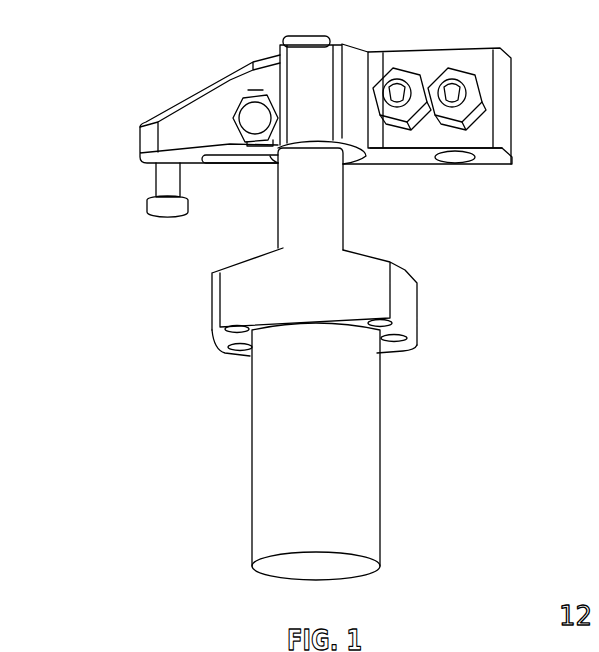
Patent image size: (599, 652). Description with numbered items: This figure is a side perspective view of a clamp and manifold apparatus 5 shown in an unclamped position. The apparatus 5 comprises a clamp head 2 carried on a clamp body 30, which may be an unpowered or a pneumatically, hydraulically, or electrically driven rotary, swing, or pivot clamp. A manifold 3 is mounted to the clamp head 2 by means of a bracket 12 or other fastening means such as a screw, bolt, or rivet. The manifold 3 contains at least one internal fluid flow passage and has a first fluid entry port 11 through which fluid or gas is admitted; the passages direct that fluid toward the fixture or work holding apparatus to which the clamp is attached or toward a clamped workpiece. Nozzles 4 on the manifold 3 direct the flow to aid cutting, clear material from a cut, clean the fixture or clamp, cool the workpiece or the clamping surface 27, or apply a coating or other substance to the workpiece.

The clamp head 2 is at (197, 93).
The manifold 3 is at (472, 48).
The nozzles 4 is at (478, 100).
The clamp and manifold apparatus 5 is at (116, 2).
The first fluid entry port 11 is at (455, 157).
The bracket 12 is at (312, 35).
The clamping surface 27 is at (165, 218).
The clamp body 30 is at (461, 262).